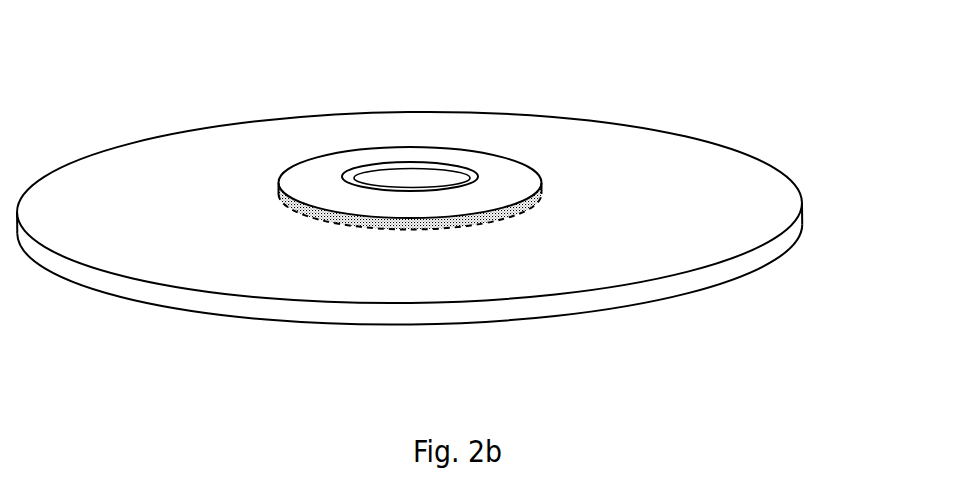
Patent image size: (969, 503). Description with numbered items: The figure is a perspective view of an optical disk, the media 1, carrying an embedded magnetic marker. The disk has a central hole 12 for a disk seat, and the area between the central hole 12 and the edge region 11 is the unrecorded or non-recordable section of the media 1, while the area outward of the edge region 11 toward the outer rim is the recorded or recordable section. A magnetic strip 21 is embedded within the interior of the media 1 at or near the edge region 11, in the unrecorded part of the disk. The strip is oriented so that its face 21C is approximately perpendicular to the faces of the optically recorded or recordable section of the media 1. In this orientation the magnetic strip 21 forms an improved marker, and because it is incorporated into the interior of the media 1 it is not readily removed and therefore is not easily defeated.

The media 1 is at (445, 214).
The edge region 11 is at (445, 218).
The central hole 12 is at (478, 163).
The magnetic strip 21 is at (521, 223).
The face of magnetic strip 21C is at (521, 218).